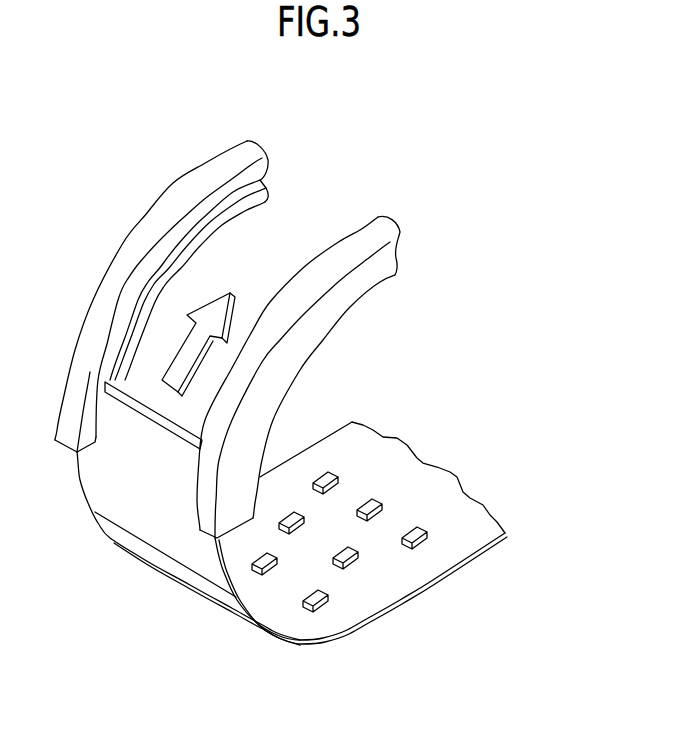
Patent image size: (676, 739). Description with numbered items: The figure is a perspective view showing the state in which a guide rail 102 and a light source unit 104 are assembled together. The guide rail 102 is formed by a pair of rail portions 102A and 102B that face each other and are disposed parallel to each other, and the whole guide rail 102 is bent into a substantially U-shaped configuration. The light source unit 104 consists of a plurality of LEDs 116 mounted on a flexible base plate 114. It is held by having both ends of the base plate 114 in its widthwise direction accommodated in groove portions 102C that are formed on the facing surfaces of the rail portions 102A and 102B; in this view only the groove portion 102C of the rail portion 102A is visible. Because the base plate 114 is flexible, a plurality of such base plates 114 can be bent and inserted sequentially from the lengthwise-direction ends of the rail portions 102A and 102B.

The guide rail 102 is at (393, 117).
The rail portion 102A is at (250, 147).
The rail portion 102B is at (330, 253).
The groove portion 102C is at (230, 198).
The light source unit 104 is at (485, 571).
The flexible base plate 114 is at (387, 580).
The LED 116 is at (378, 505).